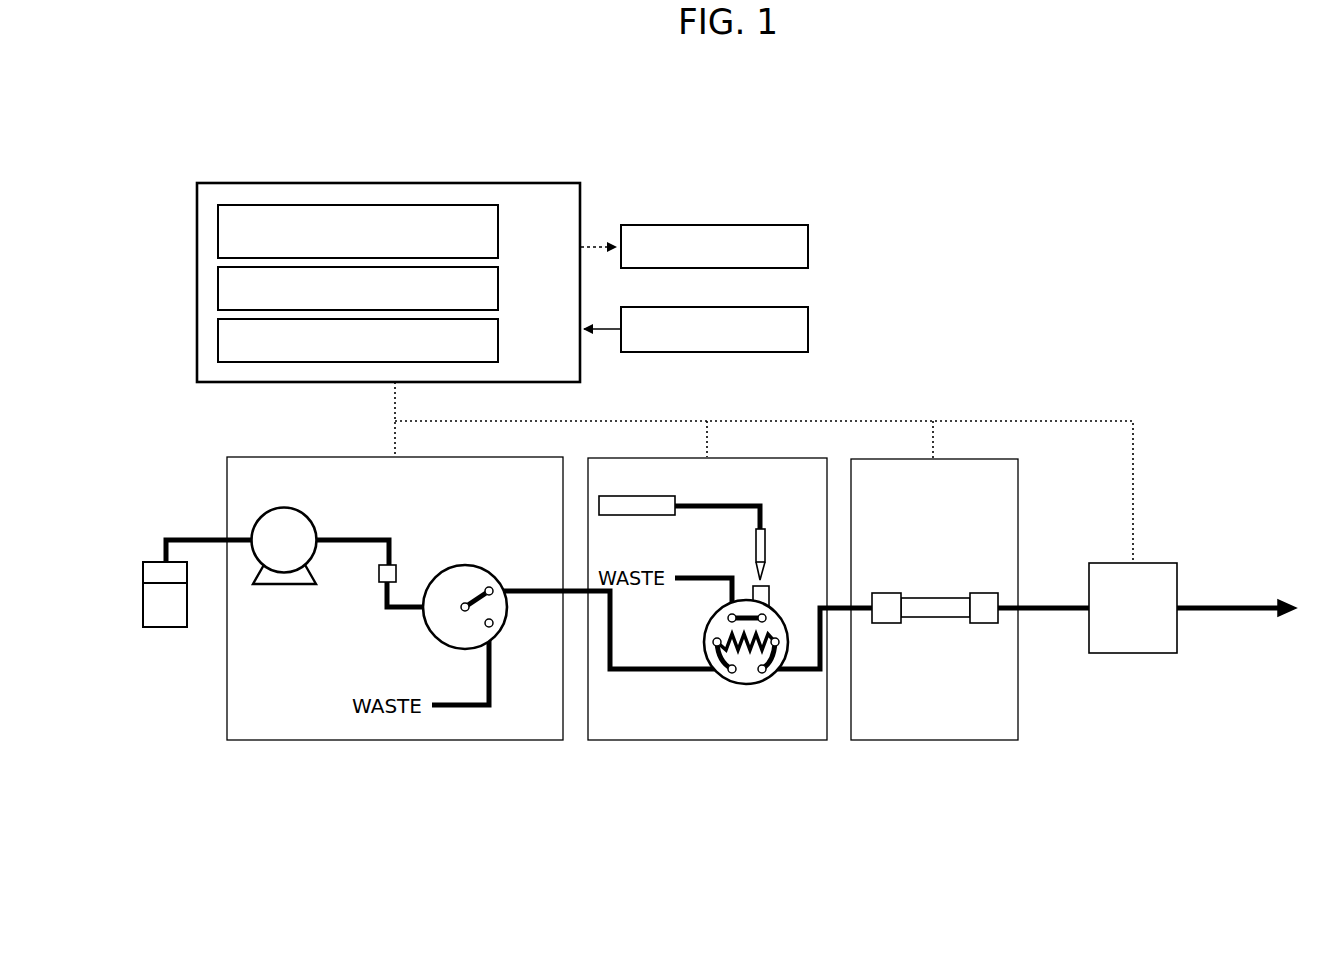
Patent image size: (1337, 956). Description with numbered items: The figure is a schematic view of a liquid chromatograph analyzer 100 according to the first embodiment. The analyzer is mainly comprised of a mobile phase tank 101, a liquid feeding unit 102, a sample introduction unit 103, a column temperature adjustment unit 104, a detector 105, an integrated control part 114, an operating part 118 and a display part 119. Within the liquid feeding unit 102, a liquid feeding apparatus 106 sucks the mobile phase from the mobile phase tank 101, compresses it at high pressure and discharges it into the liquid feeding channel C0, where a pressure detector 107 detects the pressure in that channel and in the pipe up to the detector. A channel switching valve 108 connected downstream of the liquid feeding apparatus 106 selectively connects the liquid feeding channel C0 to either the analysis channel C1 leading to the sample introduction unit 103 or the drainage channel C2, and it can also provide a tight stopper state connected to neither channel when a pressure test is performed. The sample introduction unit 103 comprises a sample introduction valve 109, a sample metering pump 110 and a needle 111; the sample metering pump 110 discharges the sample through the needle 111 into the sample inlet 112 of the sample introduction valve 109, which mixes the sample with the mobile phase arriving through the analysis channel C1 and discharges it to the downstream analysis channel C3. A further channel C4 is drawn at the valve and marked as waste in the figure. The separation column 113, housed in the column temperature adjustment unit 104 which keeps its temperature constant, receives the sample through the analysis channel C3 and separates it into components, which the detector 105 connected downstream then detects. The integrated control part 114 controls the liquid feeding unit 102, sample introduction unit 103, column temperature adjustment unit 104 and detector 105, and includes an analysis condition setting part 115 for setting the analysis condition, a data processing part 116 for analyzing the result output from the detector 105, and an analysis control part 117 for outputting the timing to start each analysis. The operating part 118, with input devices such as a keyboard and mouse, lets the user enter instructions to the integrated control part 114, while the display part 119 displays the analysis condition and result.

The liquid chromatograph analyzer 100 is at (1022, 333).
The mobile phase tank 101 is at (164, 630).
The liquid feeding unit 102 is at (396, 742).
The sample introduction unit 103 is at (709, 742).
The column temperature adjustment unit 104 is at (936, 742).
The detector 105 is at (1134, 655).
The liquid feeding apparatus 106 is at (304, 517).
The pressure detector 107 is at (396, 570).
The channel switching valve 108 is at (480, 568).
The sample introduction valve 109 is at (722, 680).
The sample metering pump 110 is at (648, 496).
The needle 111 is at (767, 550).
The sample inlet 112 is at (769, 604).
The separation column 113 is at (936, 625).
The integrated control part 114 is at (522, 183).
The analysis condition setting part 115 is at (499, 230).
The data processing part 116 is at (499, 290).
The analysis control part 117 is at (499, 344).
The operating part 118 is at (809, 330).
The display part 119 is at (809, 246).
The liquid feeding channel C0 is at (397, 614).
The analysis channel C1 is at (541, 598).
The drainage channel C2 is at (496, 676).
The analysis channel C3 is at (800, 672).
The flow channel C4 is at (692, 593).